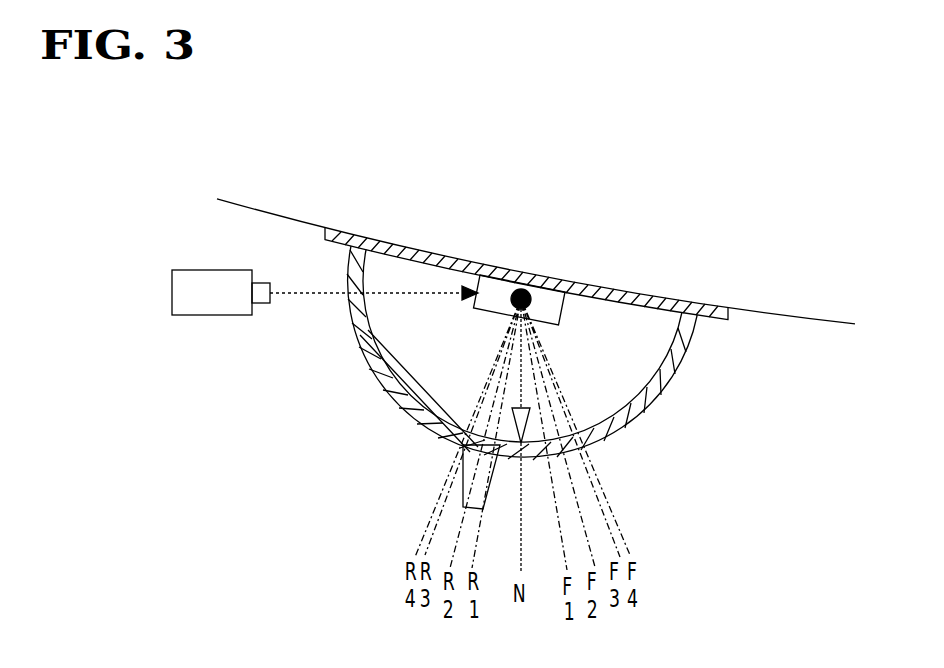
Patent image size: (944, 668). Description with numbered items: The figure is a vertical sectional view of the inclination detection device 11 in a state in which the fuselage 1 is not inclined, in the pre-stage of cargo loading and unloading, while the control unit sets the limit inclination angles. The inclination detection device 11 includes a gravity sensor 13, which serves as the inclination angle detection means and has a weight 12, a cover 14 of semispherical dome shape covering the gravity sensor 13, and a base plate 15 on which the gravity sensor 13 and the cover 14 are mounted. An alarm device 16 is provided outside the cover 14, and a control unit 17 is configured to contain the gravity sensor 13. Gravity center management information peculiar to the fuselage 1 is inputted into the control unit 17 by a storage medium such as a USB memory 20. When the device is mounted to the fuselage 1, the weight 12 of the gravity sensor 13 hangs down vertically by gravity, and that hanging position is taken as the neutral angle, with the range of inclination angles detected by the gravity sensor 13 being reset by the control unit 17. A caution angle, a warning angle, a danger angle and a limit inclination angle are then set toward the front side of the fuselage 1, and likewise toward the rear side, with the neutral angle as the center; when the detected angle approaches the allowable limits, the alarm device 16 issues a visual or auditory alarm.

The fuselage 1 is at (233, 205).
The inclination detection device 11 is at (350, 443).
The weight 12 is at (532, 425).
The gravity sensor 13 is at (568, 312).
The cover 14 is at (635, 430).
The base plate 15 is at (404, 264).
The alarm device 16 is at (460, 492).
The control unit 17 is at (492, 311).
The USB memory 20 is at (206, 316).